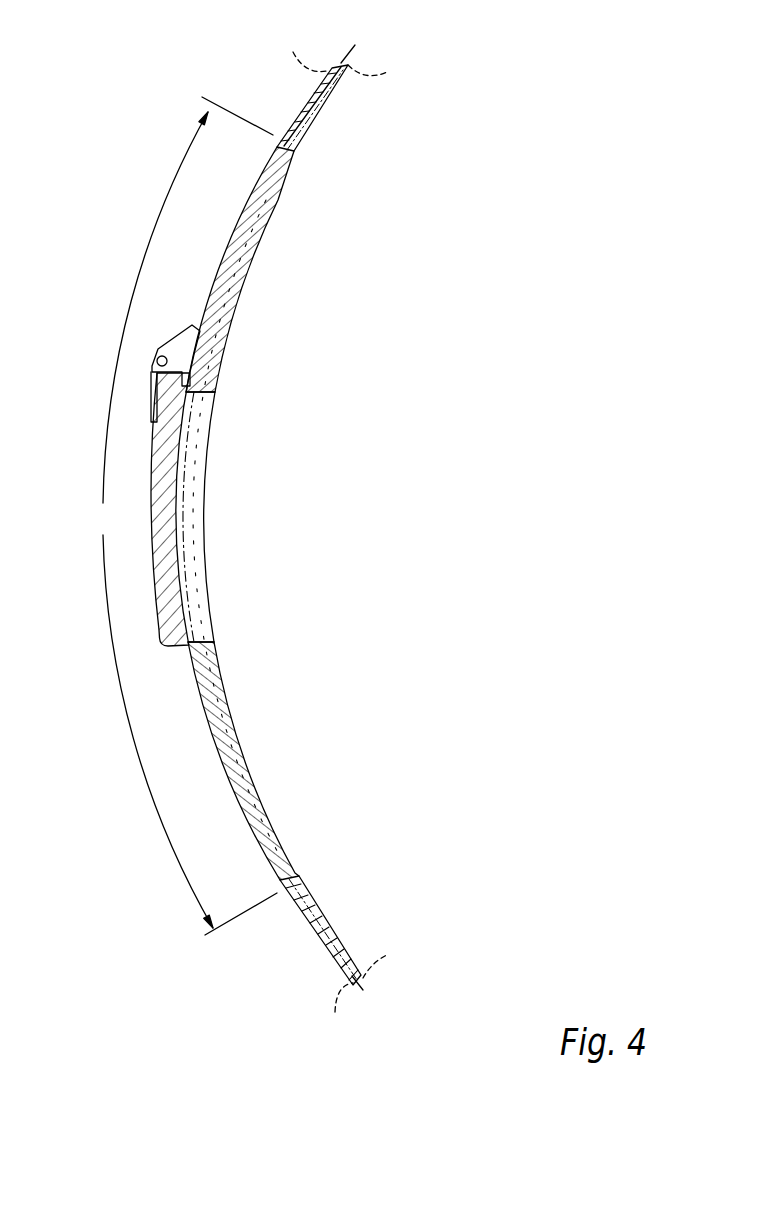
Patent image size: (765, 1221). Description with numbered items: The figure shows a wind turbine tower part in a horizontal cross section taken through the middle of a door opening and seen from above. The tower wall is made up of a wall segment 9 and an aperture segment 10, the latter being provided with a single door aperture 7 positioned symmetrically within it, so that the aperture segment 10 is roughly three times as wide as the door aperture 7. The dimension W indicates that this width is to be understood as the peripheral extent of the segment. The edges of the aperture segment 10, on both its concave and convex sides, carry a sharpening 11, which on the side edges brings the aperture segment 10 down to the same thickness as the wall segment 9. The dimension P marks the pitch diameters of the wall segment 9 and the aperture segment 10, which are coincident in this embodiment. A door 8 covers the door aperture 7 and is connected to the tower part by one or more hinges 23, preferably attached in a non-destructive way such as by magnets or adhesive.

The door aperture 7 is at (190, 460).
The door 8 is at (163, 583).
The wall segment 9 is at (295, 108).
The aperture segment 10 is at (214, 268).
The sharpening 11 is at (277, 882).
The hinge 23 is at (182, 347).
The pitch diameter dimension P is at (242, 270).
The width dimension W is at (185, 516).